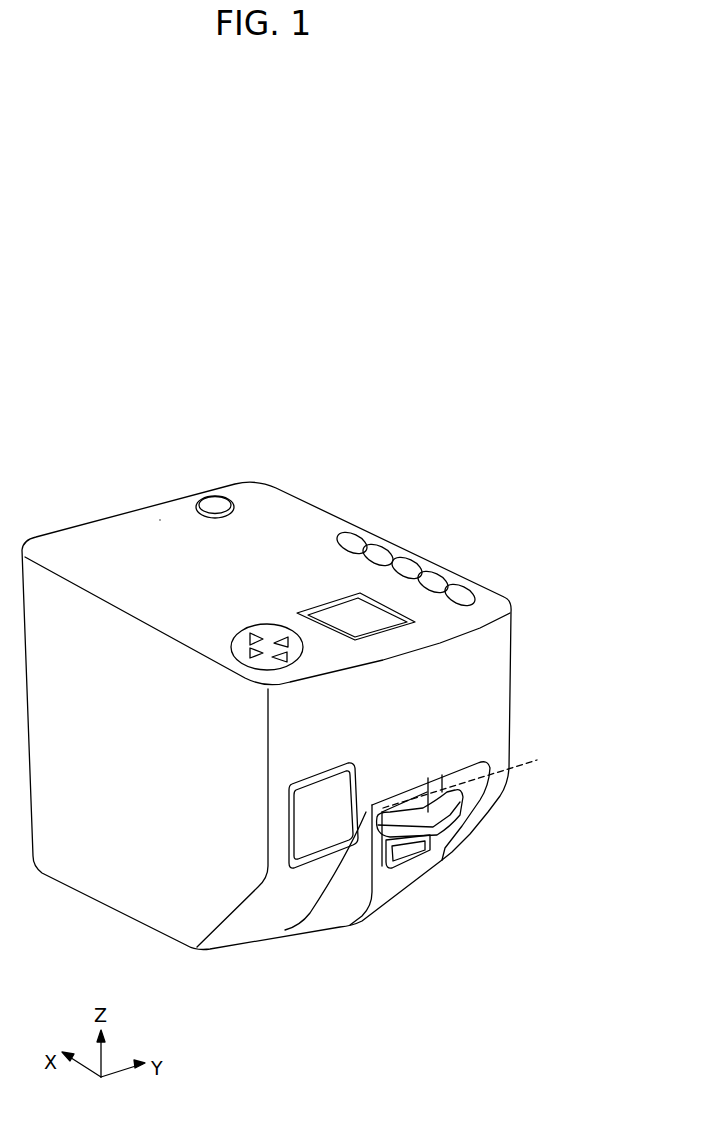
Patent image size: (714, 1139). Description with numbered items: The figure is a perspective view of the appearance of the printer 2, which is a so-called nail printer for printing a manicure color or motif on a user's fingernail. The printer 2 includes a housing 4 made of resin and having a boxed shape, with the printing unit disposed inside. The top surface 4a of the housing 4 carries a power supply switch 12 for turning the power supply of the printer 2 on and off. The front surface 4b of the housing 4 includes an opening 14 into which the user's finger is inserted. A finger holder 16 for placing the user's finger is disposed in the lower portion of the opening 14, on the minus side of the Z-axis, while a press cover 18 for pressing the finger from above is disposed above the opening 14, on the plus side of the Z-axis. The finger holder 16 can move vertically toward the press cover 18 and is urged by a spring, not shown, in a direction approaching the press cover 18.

The printer 2 is at (296, 690).
The housing 4 is at (293, 695).
The top surface 4a is at (290, 515).
The front surface 4b is at (490, 660).
The power supply switch 12 is at (223, 497).
The opening 14 is at (415, 799).
The finger holder 16 is at (435, 818).
The press cover 18 is at (476, 777).